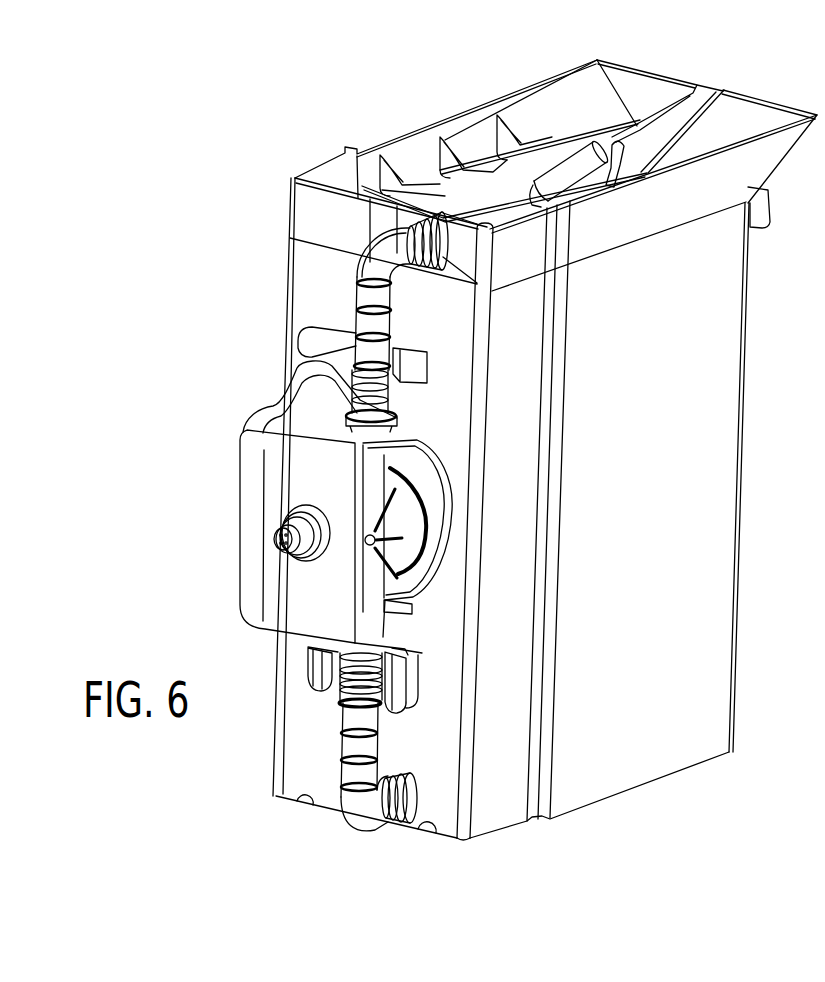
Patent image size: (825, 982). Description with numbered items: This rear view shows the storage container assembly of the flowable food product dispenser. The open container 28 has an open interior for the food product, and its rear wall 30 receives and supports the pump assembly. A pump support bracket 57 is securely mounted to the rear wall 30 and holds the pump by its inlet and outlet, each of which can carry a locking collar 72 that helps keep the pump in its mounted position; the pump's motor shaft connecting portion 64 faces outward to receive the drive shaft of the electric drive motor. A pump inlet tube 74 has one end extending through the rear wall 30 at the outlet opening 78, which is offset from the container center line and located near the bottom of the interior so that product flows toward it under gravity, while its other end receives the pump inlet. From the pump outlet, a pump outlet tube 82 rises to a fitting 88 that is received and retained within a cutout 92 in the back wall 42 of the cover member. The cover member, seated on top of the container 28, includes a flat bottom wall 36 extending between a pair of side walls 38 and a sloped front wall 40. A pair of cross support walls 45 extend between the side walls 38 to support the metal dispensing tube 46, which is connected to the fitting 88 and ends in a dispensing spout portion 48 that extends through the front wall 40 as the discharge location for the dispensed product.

The open container 28 is at (718, 667).
The rear wall 30 is at (293, 282).
The bottom wall 36 is at (437, 178).
The side walls 38 is at (473, 124).
The sloped front wall 40 is at (652, 88).
The back wall 42 is at (302, 212).
The cross support walls 45 is at (508, 138).
The dispensing tube 46 is at (574, 173).
The dispensing spout portion 48 is at (766, 190).
The pump support bracket 57 is at (272, 457).
The motor shaft connecting portion 64 is at (275, 538).
The locking collar 72 is at (391, 411).
The pump inlet tube 74 is at (340, 776).
The outlet opening 78 is at (410, 787).
The pump outlet tube 82 is at (384, 329).
The fitting 88 is at (446, 248).
The cutout 92 is at (393, 217).